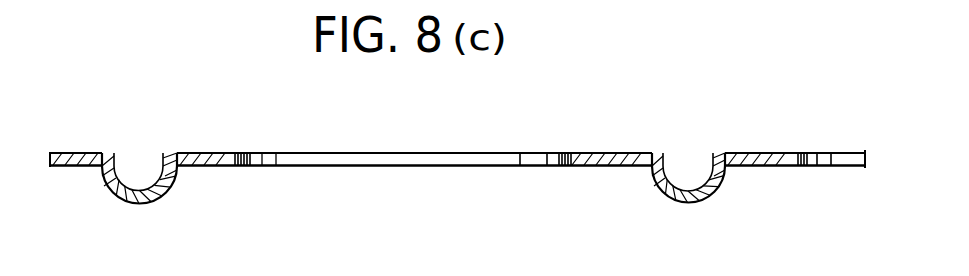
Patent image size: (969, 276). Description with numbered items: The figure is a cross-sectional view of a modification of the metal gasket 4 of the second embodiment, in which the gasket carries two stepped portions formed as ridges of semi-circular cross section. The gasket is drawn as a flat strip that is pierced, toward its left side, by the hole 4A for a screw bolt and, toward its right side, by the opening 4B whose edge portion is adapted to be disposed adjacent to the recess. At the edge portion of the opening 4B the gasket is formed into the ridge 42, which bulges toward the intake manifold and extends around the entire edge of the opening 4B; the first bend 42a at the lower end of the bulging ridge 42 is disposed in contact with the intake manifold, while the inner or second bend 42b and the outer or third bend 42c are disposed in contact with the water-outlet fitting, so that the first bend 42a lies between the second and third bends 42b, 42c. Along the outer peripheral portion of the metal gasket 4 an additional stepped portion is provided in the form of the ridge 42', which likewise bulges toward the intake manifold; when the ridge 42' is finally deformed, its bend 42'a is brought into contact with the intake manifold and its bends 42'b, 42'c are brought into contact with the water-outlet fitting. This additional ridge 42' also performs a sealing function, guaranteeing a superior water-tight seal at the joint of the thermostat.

The metal gasket 4 is at (758, 153).
The hole for a screw bolt 4A is at (287, 153).
The opening 4B is at (808, 152).
The ridge 42 is at (708, 198).
The first bend 42a is at (688, 204).
The second bend 42b is at (717, 152).
The third bend 42c is at (662, 152).
The ridge 42' is at (160, 197).
The bend 42'a is at (128, 220).
The bend 42'b is at (189, 136).
The bend 42'c is at (106, 141).